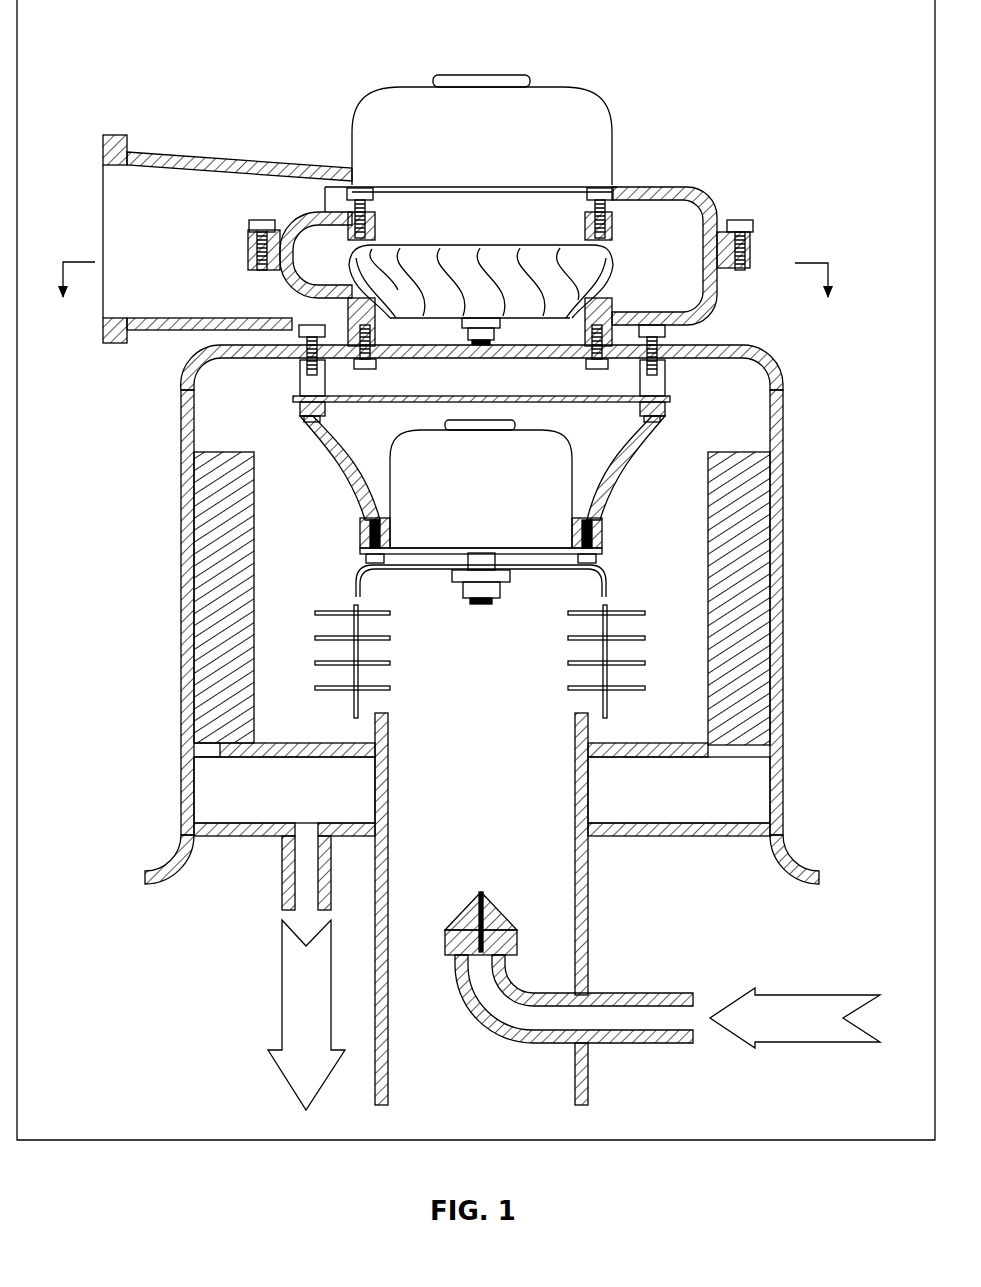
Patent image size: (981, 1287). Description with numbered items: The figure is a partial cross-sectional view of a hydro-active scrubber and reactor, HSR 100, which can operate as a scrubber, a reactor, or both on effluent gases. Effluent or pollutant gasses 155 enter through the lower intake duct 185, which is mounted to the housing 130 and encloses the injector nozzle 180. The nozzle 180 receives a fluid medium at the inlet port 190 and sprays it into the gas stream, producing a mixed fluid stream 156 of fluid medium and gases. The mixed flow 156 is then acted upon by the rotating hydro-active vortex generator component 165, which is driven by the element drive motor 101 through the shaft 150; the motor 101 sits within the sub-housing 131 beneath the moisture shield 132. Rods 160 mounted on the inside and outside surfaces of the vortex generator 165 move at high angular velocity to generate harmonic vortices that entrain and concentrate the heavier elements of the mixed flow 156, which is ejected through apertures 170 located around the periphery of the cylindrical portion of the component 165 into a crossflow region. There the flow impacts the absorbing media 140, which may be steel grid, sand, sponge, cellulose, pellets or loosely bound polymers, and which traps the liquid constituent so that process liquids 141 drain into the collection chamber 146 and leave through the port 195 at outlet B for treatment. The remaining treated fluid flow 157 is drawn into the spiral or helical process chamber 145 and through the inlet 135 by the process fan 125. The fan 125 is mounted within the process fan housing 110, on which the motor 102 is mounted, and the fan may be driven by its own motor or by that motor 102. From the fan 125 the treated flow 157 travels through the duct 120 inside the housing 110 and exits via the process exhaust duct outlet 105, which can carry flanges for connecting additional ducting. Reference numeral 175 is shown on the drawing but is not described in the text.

The hydro-active scrubber and reactor (HSR) 100 is at (291, 82).
The element drive motor 101 is at (481, 484).
The motor 102 is at (482, 130).
The process exhaust duct outlet 105 is at (118, 126).
The process fan housing 110 is at (707, 181).
The duct 120 is at (438, 256).
The process fan 125 is at (481, 295).
The housing 130 is at (785, 366).
The sub-housing 131 is at (610, 460).
The moisture barrier or moisture shield 132 is at (425, 403).
The inlet 135 is at (388, 340).
The absorbing media 140 is at (206, 446).
The process liquids 141 is at (307, 866).
The spiral or helical process chamber 145 is at (481, 598).
The collection chamber 146 is at (482, 790).
The shaft 150 is at (494, 602).
The effluent or pollutant gasses 155 is at (410, 930).
The mixed fluid stream 156 is at (428, 600).
The treated fluid flow 157 is at (68, 215).
The rods 160 is at (627, 600).
The hydro-active vortex generator component 165 is at (352, 573).
The apertures 170 is at (368, 626).
The plates 175 is at (486, 650).
The injector nozzle 180 is at (462, 903).
The lower fluid flow inlet or intake duct 185 is at (596, 898).
The inlet port 190 is at (636, 982).
The port 195 is at (268, 882).